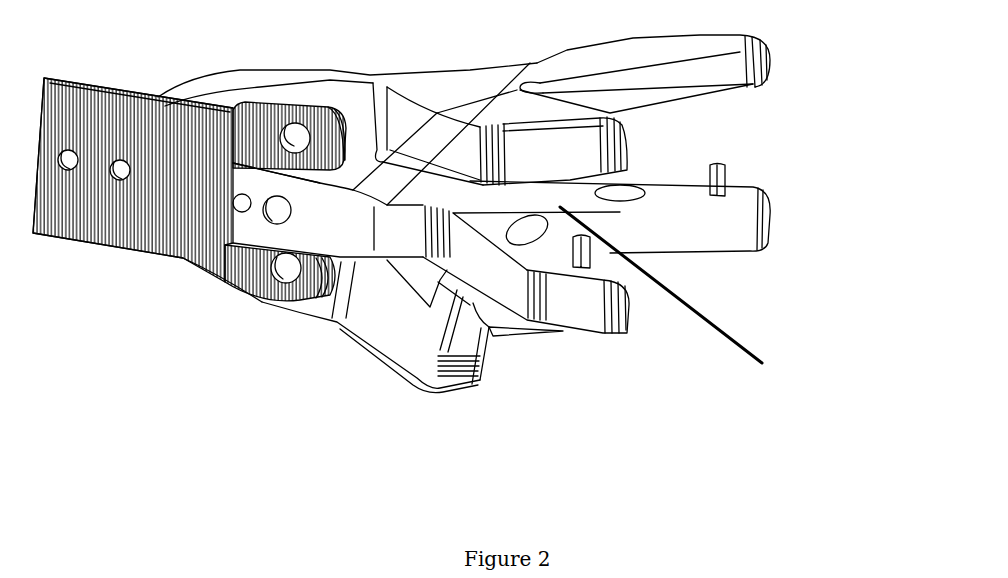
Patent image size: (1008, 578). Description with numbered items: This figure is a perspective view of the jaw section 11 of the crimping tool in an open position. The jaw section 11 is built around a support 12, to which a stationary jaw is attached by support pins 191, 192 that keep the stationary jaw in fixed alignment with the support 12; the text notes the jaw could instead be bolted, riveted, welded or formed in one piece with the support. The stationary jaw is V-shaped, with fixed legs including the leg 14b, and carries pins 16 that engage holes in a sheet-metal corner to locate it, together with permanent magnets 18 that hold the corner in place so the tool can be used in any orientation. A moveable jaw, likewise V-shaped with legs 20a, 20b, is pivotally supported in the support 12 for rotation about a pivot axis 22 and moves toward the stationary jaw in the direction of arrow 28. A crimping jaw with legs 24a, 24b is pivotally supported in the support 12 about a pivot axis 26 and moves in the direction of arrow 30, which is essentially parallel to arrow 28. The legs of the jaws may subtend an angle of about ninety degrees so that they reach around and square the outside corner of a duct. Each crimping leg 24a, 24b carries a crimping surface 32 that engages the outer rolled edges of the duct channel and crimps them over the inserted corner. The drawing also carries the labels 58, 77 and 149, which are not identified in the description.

The jaw section 11 is at (376, 50).
The support 12 is at (74, 86).
The leg of stationary jaw 14b is at (628, 320).
The upper arm 149 is at (733, 243).
The pins 16 is at (728, 172).
The permanent magnets 18 is at (633, 189).
The leg of moveable jaw 20a is at (767, 62).
The leg of moveable jaw 20b is at (626, 148).
The pivot axis 22 is at (286, 126).
The leg of crimping jaw 24a is at (560, 333).
The leg of crimping jaw 24b is at (437, 387).
The pivot axis 26 is at (273, 280).
The arrow 28 is at (849, 62).
The arrow 30 is at (350, 420).
The crimping surface 32 is at (490, 328).
The body block 58 is at (238, 174).
The axis line 77 is at (674, 298).
The support pin 191 is at (290, 216).
The support pin 192 is at (237, 216).